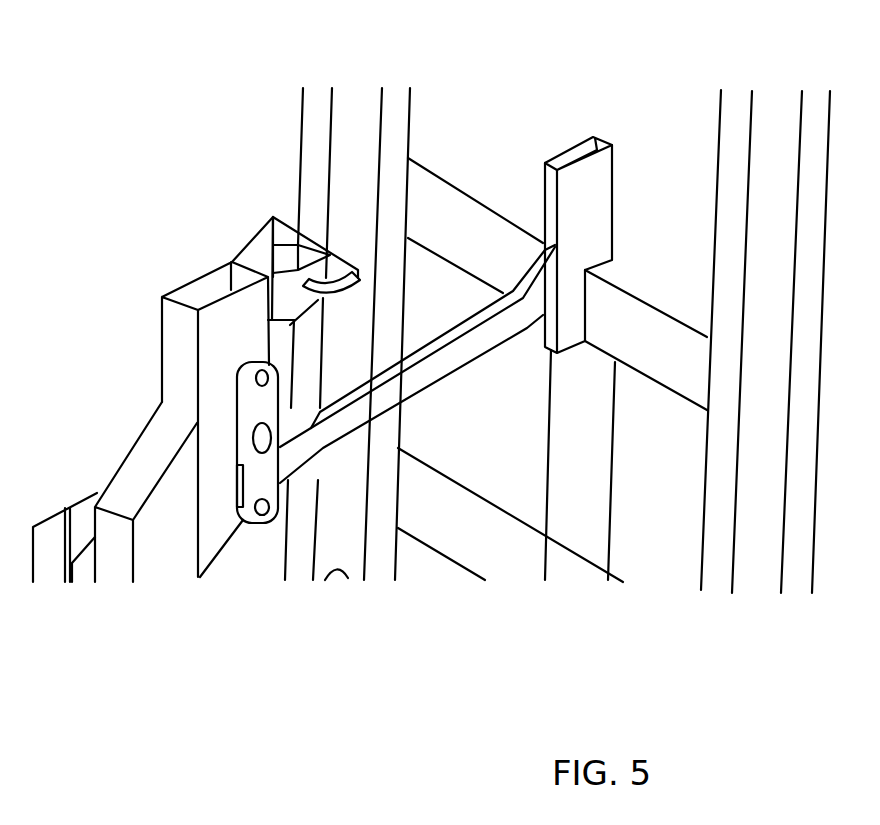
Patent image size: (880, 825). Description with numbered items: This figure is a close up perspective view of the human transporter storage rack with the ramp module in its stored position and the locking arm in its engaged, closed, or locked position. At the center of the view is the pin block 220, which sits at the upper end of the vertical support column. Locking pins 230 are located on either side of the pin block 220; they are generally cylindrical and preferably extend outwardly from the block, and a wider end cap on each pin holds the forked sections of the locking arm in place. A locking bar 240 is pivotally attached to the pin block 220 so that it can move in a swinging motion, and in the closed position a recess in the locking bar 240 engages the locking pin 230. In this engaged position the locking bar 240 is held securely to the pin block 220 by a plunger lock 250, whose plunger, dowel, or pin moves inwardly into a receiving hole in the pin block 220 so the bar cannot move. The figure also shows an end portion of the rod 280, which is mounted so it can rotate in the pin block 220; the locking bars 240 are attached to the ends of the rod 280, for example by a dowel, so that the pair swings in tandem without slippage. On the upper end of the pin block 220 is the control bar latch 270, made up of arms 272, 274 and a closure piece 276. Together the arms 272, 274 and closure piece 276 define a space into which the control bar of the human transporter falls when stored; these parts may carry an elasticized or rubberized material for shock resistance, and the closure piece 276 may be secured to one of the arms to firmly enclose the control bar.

The pin block 220 is at (218, 313).
The locking pin 230 is at (263, 508).
The locking bar 240 is at (258, 403).
The plunger lock 250 is at (258, 440).
The control bar latch 270 is at (273, 217).
The arm 272 is at (255, 240).
The arm 274 is at (315, 303).
The closure piece 276 is at (303, 240).
The rod 280 is at (260, 378).